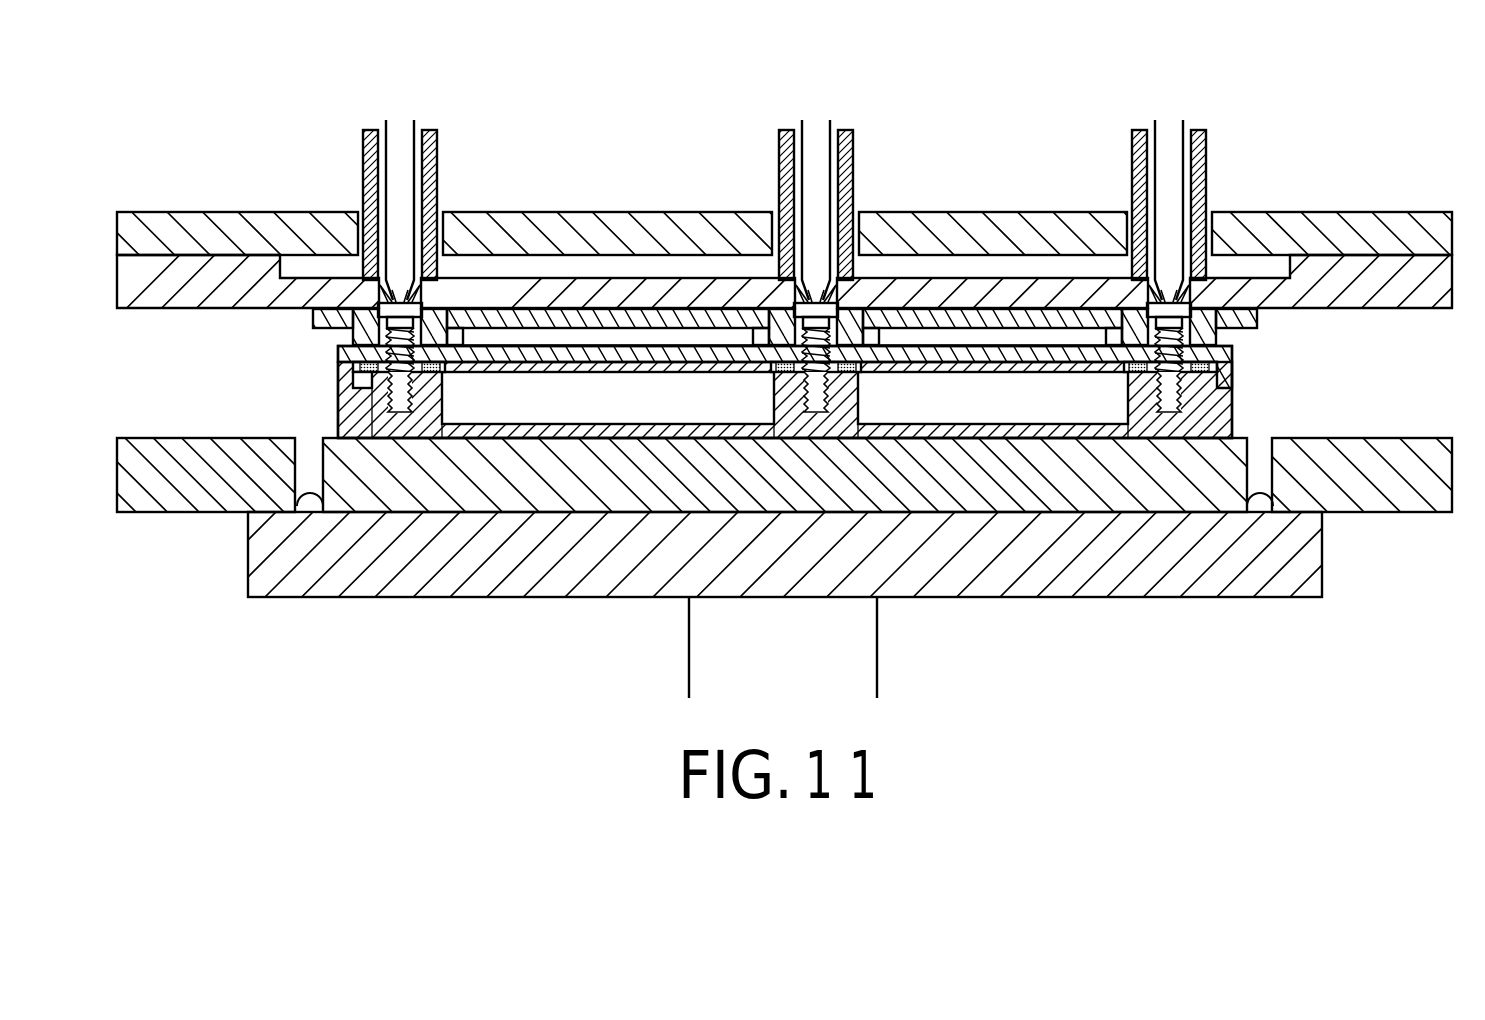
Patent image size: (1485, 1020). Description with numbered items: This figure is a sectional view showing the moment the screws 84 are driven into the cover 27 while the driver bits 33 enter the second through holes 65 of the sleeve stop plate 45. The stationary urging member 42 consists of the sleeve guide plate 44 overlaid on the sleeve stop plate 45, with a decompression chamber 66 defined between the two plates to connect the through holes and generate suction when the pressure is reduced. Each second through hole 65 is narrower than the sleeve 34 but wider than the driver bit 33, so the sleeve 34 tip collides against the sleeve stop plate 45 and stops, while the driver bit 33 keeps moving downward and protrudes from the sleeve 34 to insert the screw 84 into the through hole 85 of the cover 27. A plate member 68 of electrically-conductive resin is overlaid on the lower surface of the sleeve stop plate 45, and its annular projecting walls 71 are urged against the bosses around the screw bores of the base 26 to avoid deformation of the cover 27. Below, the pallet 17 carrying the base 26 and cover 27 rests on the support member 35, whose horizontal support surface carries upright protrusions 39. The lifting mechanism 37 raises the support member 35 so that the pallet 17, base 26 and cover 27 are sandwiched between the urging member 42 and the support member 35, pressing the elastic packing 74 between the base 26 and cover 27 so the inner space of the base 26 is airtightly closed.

The pallet 17 is at (158, 438).
The base 26 is at (1233, 409).
The cover 27 is at (1233, 357).
The driver bit 33 is at (1155, 145).
The sleeve 34 is at (1205, 141).
The support member 35 is at (248, 591).
The lifting mechanism 37 is at (689, 628).
The protrusions 39 is at (1267, 502).
The urging member 42 is at (1377, 187).
The sleeve guide plate 44 is at (149, 212).
The sleeve stop plate 45 is at (160, 309).
The second through hole 65 is at (1173, 303).
The decompression chamber 66 is at (935, 253).
The plate member 68 is at (313, 320).
The annular projecting walls 71 is at (1095, 343).
The packing 74 is at (1195, 372).
The screws 84 is at (1147, 307).
The through holes 85 is at (1153, 368).